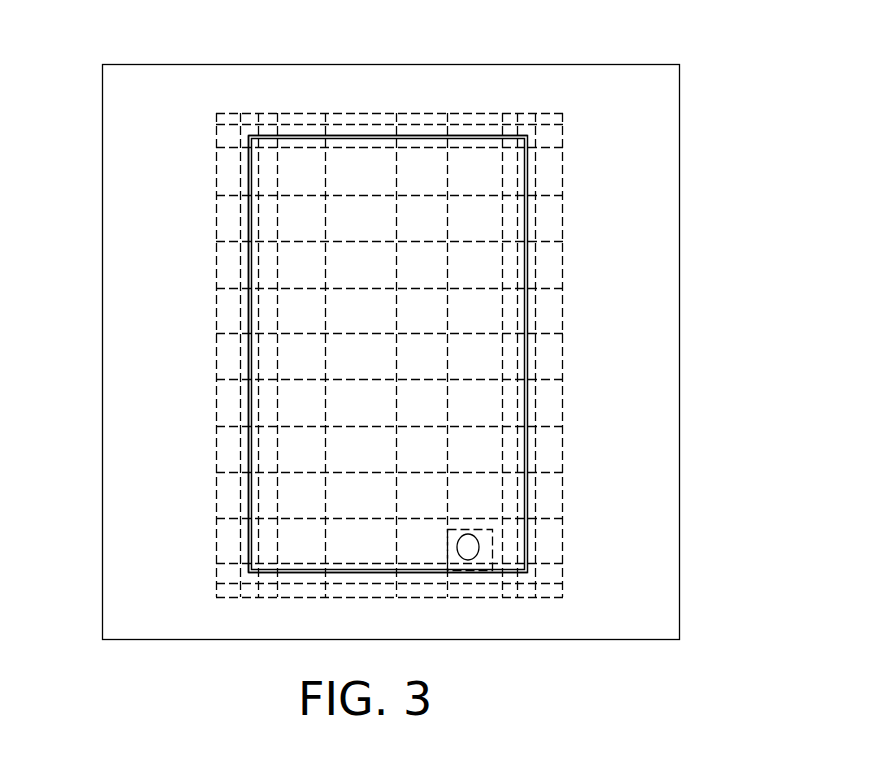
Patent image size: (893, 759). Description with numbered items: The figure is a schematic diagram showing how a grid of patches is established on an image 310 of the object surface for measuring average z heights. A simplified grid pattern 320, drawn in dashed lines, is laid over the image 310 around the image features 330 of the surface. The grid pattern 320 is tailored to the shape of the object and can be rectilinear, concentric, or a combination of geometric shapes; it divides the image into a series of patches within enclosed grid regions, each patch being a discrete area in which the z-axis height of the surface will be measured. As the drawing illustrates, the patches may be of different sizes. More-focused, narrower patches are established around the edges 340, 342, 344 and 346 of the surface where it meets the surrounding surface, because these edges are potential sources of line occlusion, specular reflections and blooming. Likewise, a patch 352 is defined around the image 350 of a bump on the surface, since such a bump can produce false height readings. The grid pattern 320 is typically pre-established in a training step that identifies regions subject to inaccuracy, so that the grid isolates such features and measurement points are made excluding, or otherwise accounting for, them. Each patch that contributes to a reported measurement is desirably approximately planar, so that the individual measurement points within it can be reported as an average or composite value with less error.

The image 310 is at (688, 150).
The grid pattern 320 is at (566, 173).
The image features 330 is at (528, 208).
The edge 340 is at (528, 303).
The edge 342 is at (249, 343).
The edge 344 is at (395, 573).
The edge 346 is at (348, 135).
The image of bump 350 is at (470, 551).
The patch 352 is at (500, 543).